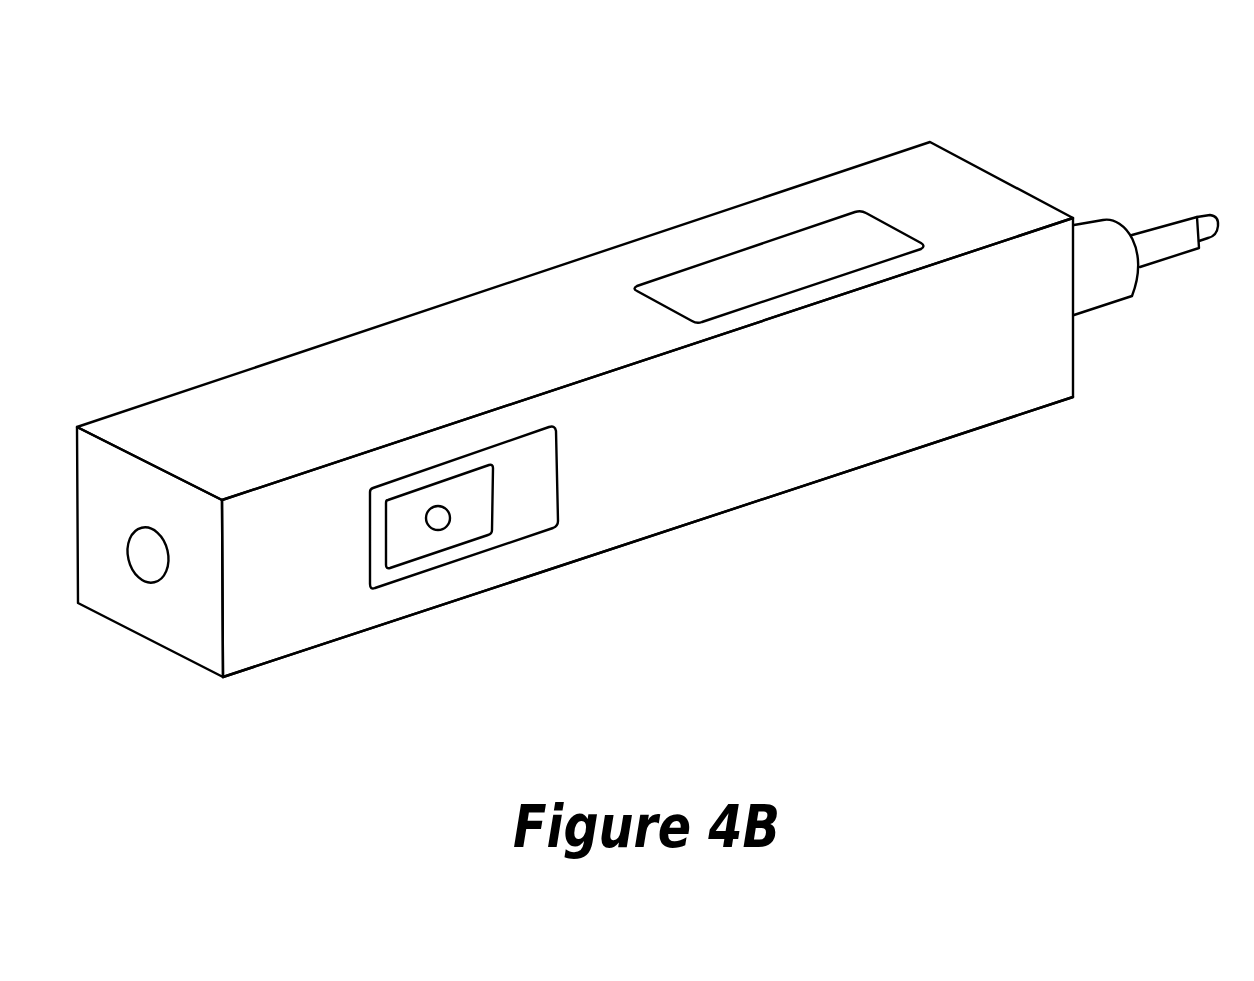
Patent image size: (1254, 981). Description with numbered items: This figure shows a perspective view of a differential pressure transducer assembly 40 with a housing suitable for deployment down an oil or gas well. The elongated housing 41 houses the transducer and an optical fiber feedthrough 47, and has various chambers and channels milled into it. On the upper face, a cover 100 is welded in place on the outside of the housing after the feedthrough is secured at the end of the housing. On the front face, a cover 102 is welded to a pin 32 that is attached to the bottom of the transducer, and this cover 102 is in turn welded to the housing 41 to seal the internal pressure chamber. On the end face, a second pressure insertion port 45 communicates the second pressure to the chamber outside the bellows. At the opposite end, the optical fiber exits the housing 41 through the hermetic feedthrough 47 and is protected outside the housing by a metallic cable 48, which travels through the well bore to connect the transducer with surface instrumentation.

The handheld device housing 40 is at (383, 163).
The housing 41 is at (890, 458).
The cover 100 is at (748, 247).
The cover 102 is at (525, 498).
The pin 32 is at (438, 518).
The second pressure insertion port 45 is at (148, 555).
The optical fiber feedthrough 47 is at (1107, 290).
The metallic cable 48 is at (1205, 245).